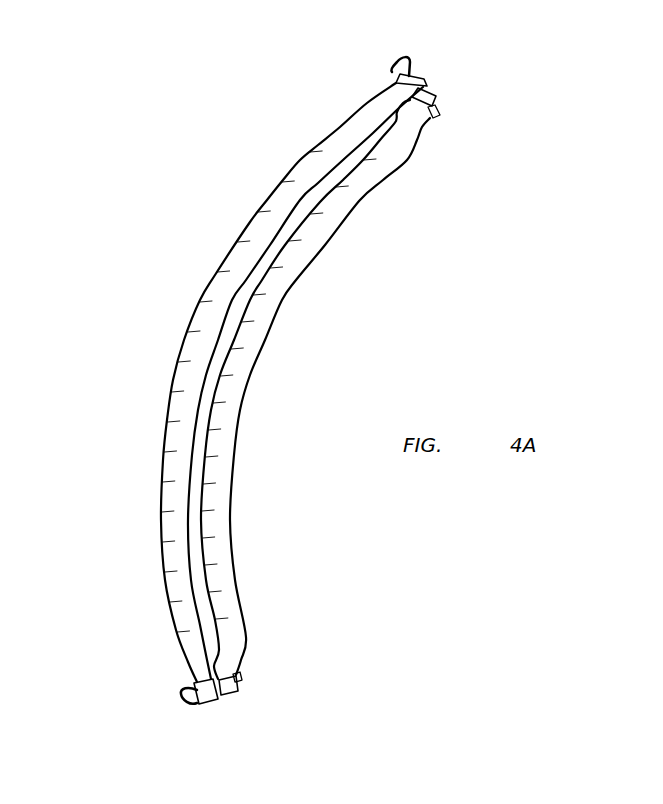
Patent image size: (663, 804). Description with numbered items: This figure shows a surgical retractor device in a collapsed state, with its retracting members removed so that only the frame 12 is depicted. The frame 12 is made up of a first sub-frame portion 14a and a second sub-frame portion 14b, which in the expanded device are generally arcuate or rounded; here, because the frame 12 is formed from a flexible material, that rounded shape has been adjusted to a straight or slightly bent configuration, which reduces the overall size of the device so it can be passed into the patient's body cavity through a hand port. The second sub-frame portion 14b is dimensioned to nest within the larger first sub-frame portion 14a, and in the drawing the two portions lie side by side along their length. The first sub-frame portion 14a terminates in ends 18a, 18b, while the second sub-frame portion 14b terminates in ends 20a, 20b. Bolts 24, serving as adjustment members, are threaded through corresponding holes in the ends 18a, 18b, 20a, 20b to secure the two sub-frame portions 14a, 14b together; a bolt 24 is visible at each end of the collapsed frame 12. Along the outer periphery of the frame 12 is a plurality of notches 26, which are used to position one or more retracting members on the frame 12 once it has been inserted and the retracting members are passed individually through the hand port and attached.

The frame 12 is at (288, 409).
The first sub-frame portion 14a is at (237, 386).
The second sub-frame portion 14b is at (364, 414).
The end 18a is at (398, 82).
The end 18b is at (197, 683).
The end 20a is at (413, 123).
The end 20b is at (232, 692).
The bolt 24 is at (397, 62).
The notch 26 is at (164, 479).